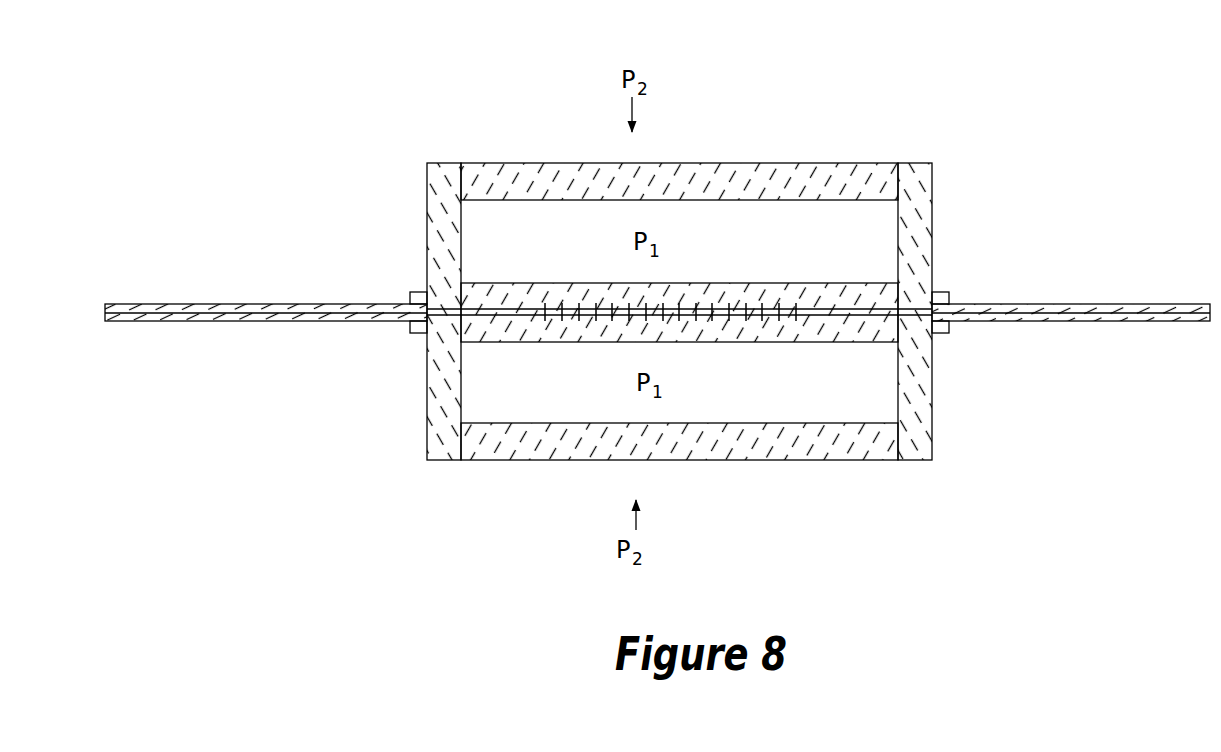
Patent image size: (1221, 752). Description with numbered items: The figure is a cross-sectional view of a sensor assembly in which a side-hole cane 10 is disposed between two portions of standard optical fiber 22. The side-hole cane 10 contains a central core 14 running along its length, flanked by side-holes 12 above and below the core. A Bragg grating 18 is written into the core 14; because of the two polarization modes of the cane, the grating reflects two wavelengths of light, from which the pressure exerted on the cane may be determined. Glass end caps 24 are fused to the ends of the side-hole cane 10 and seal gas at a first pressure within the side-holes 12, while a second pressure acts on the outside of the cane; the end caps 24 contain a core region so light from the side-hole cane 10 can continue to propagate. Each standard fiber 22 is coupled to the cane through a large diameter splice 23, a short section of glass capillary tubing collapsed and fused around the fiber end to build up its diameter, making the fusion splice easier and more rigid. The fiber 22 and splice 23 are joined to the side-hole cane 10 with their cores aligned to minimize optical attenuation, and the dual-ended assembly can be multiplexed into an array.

The side-hole cane 10 is at (676, 334).
The side-holes 12 is at (820, 230).
The core 14 is at (239, 304).
The Bragg grating 18 is at (706, 296).
The standard optical fiber 22 is at (303, 348).
The large diameter splice 23 is at (415, 292).
The glass end caps 24 is at (443, 440).